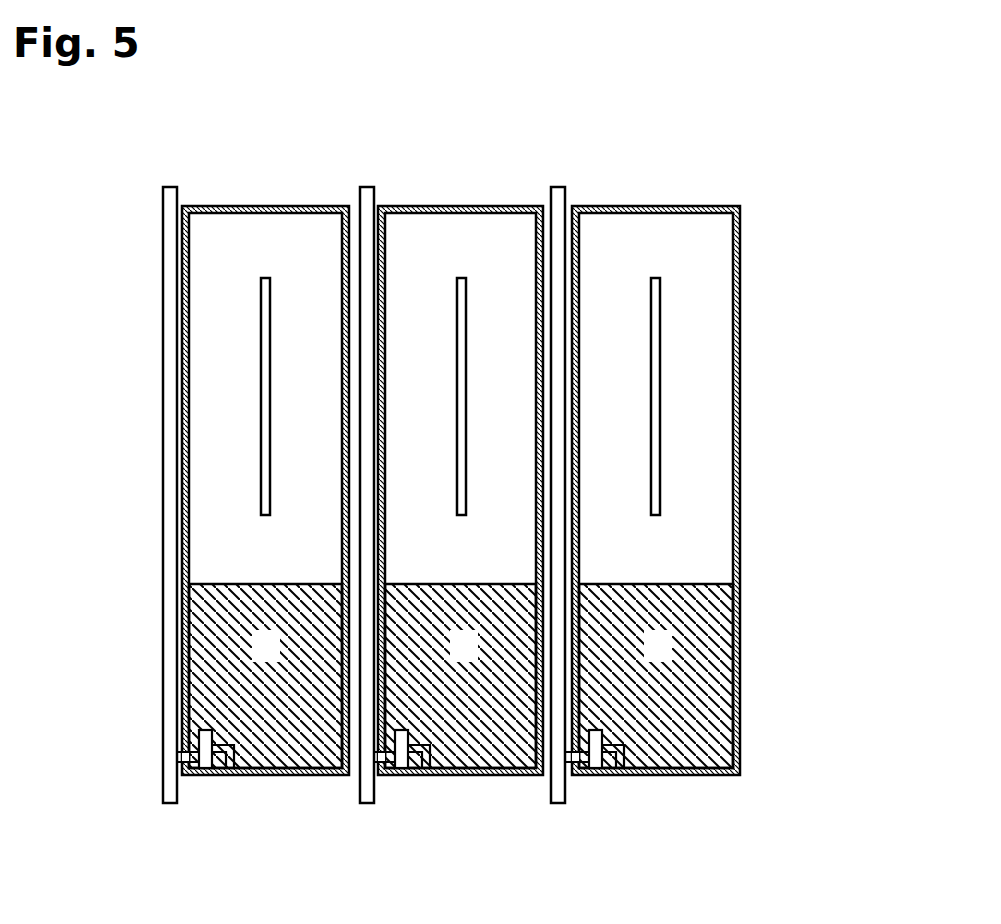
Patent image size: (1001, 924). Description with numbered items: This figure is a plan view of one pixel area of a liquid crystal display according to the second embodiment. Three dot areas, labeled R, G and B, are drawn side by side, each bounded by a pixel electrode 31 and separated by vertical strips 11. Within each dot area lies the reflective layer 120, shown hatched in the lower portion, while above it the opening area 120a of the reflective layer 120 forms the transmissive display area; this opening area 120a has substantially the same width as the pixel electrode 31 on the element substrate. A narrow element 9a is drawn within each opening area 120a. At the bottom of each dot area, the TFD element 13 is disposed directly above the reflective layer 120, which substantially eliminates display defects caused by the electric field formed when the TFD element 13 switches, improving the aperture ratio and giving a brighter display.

The pixel electrode 31 is at (215, 258).
The substrate / partition pillar 11 is at (168, 332).
The opening area 120a is at (245, 405).
The electrode 9a is at (262, 495).
The reflective layer 120 is at (202, 643).
The TFD element 13 is at (209, 784).